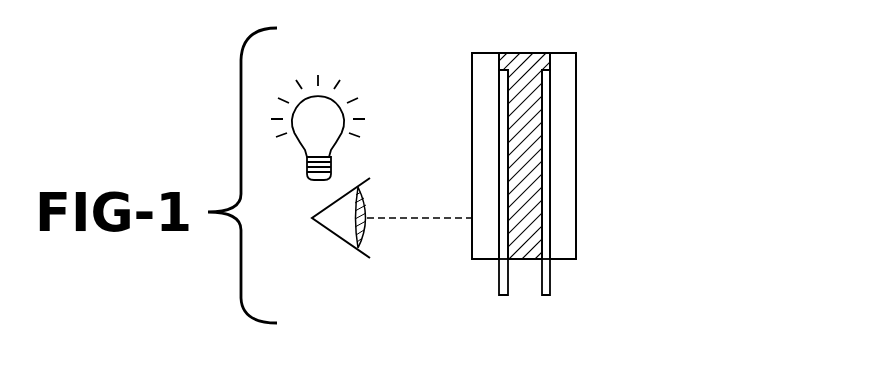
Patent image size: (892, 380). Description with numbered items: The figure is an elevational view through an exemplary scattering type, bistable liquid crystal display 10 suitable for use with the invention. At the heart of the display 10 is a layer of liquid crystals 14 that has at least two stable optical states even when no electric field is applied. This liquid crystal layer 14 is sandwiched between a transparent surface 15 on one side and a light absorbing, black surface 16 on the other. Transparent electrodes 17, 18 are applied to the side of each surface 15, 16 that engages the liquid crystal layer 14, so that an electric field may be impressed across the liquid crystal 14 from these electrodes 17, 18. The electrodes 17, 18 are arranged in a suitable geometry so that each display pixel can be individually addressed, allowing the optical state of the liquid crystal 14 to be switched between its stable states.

The liquid crystal display 10 is at (636, 134).
The liquid crystal layer 14 is at (527, 57).
The transparent surface 15 is at (472, 85).
The light absorbing surface 16 is at (577, 203).
The transparent electrode 17 is at (499, 282).
The transparent electrode 18 is at (551, 282).